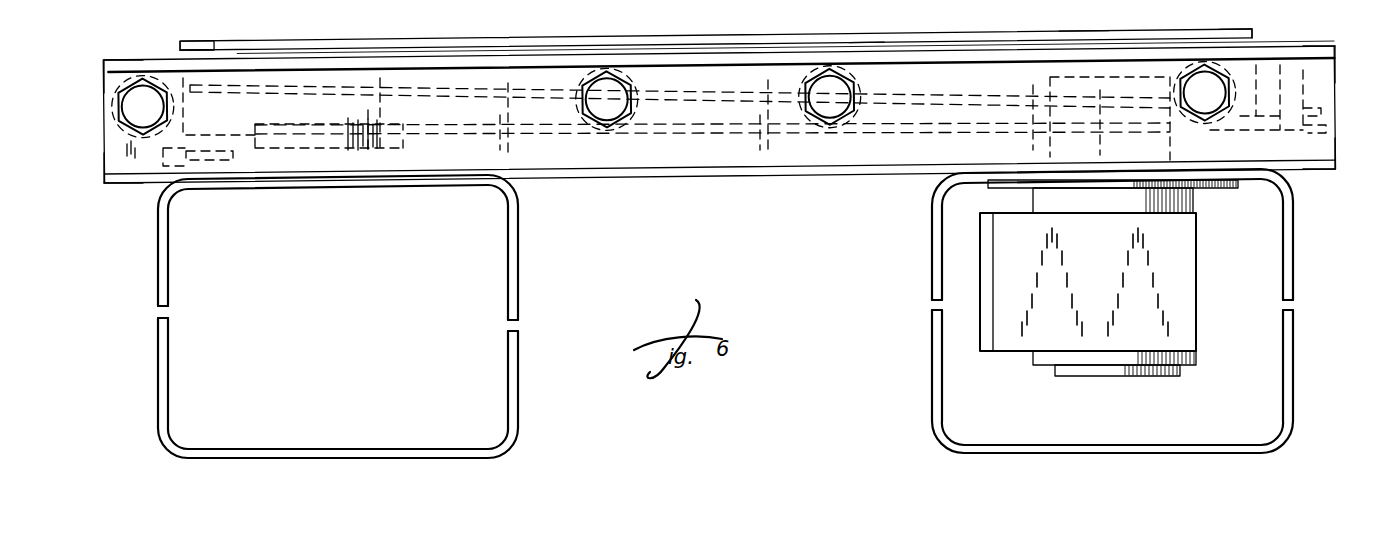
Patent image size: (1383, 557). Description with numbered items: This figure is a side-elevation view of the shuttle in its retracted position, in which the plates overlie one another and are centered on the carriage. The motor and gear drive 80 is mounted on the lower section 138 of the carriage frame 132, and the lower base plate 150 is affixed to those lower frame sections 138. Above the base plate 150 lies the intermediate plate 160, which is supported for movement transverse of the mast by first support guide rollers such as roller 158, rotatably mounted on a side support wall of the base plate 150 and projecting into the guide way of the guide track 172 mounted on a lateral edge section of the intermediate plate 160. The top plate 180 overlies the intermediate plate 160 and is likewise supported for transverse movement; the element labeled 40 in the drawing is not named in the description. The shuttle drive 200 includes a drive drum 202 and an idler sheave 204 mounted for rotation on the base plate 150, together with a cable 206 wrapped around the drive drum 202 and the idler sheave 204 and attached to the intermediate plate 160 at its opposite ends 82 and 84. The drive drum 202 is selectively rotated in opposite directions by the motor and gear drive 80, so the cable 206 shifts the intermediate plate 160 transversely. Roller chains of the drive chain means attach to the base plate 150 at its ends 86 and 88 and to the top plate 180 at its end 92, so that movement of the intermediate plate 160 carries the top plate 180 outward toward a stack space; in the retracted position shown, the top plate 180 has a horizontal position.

The guide rail end 40 is at (1242, 25).
The motor and gear drive 80 is at (1115, 322).
The end of the intermediate plate 82 is at (1328, 41).
The end of the intermediate plate 84 is at (96, 52).
The end of the base plate 86 is at (1328, 162).
The end of the base plate 88 is at (97, 176).
The end of the top plate 92 is at (197, 5).
The carriage frame 132 is at (532, 283).
The lower section of the carriage frame 138 is at (150, 233).
The lower base plate 150 is at (878, 174).
The first support guide roller 158 is at (103, 99).
The intermediate plate 160 is at (929, 18).
The guide track 172 is at (858, 54).
The top plate 180 is at (1085, 0).
The shuttle drive 200 is at (986, 87).
The drive drum 202 is at (1125, 67).
The idler sheave 204 is at (305, 139).
The cable 206 is at (734, 125).